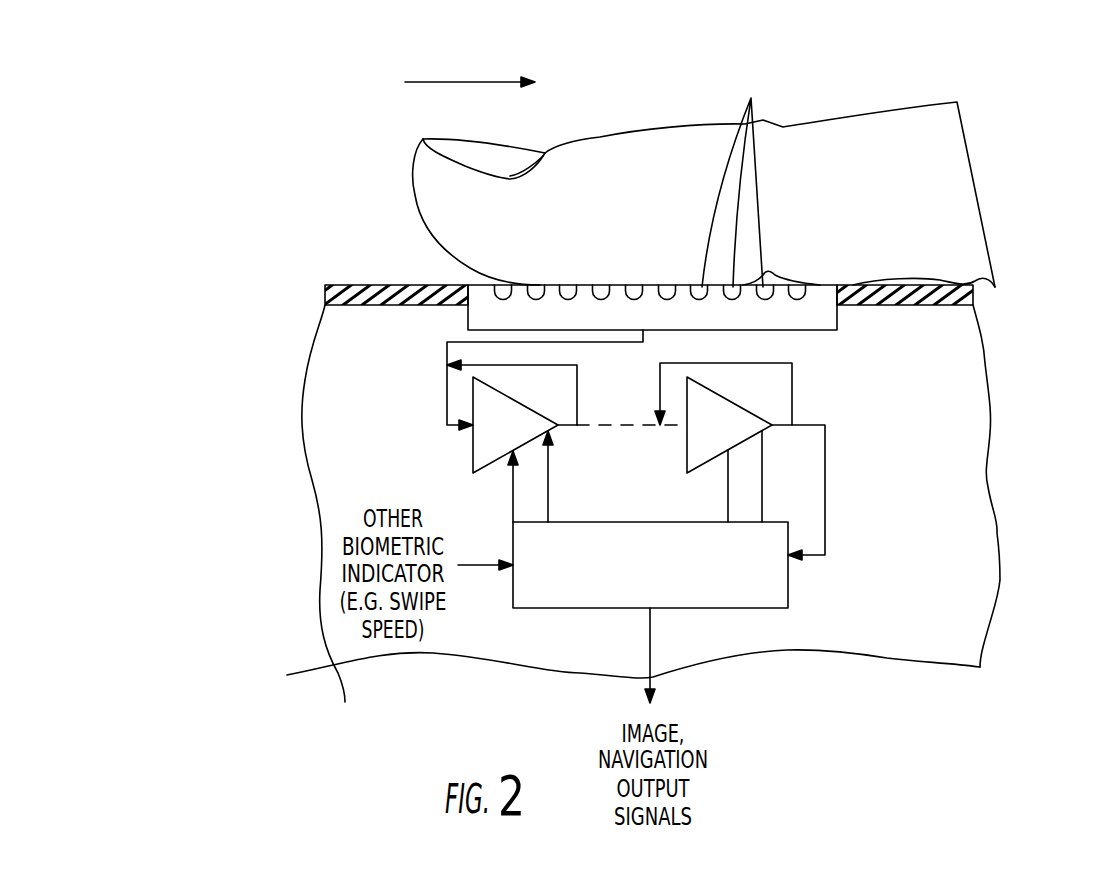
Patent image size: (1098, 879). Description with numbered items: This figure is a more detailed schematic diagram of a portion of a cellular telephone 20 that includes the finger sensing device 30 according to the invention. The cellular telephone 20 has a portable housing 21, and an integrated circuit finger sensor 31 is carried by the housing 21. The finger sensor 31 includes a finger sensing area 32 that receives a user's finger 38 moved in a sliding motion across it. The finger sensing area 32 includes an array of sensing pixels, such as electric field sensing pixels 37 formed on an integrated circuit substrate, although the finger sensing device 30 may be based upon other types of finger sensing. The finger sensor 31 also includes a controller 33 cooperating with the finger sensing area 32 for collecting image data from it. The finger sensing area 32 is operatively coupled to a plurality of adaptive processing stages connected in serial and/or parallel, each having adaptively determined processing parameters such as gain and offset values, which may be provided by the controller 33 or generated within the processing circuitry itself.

The cellular telephone 20 is at (340, 161).
The portable housing 21 is at (338, 285).
The finger sensing device 30 is at (394, 432).
The integrated circuit finger sensor 31 is at (455, 319).
The finger sensing area 32 is at (837, 323).
The controller 33 is at (787, 608).
The electric field sensing pixels 37 is at (734, 175).
The user's finger 38 is at (913, 108).